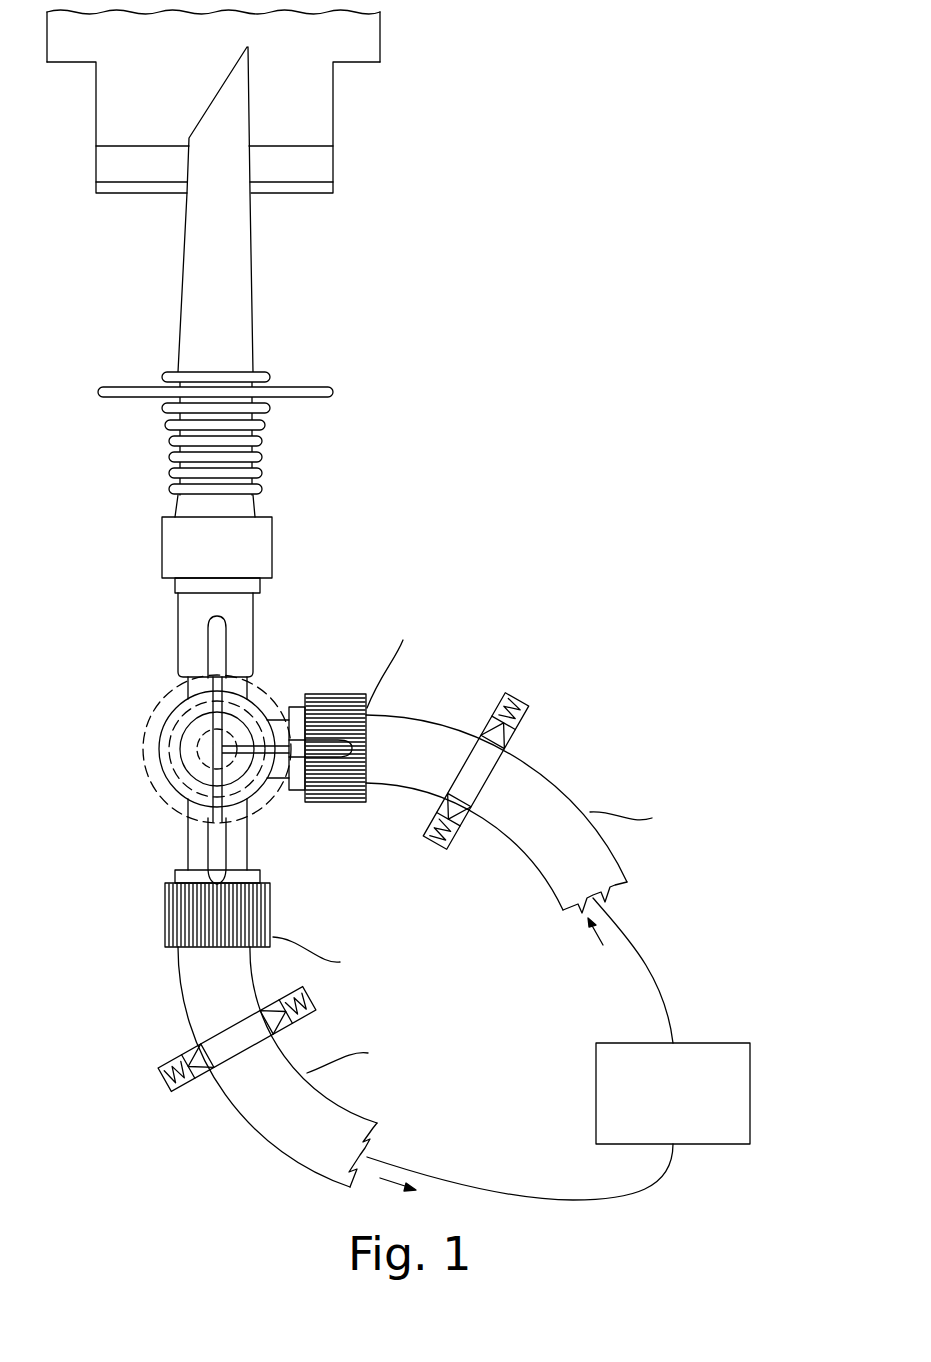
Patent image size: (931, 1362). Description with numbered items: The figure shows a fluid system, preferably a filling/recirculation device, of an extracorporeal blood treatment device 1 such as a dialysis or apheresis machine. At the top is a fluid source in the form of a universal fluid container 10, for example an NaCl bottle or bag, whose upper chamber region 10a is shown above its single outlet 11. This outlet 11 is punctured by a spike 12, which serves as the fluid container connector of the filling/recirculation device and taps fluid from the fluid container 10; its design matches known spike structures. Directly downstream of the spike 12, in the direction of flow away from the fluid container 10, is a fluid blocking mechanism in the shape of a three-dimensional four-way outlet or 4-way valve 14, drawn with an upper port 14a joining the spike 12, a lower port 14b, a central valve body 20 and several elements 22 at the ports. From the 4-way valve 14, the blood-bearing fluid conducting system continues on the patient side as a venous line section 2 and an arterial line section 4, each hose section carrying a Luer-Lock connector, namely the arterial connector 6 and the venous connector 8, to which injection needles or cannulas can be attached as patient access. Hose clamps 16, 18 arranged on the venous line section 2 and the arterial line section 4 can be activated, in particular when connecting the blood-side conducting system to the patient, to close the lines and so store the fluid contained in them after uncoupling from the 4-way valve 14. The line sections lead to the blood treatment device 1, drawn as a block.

The extracorporeal blood treatment device 1 is at (708, 1055).
The venous line section 2 is at (543, 770).
The arterial line section 4 is at (180, 988).
The arterial connector 6 is at (177, 912).
The venous connector 8 is at (328, 693).
The fluid container 10 is at (320, 112).
The container chamber 10a is at (363, 35).
The outlet 11 is at (317, 167).
The spike 12 is at (227, 302).
The 4-way valve 14 is at (198, 742).
The upper valve port 14a is at (178, 607).
The lower valve port 14b is at (187, 825).
The hose clamp 16 is at (527, 703).
The hose clamp 18 is at (160, 1080).
The valve body 20 is at (185, 752).
The sensor / detector 22 is at (213, 651).